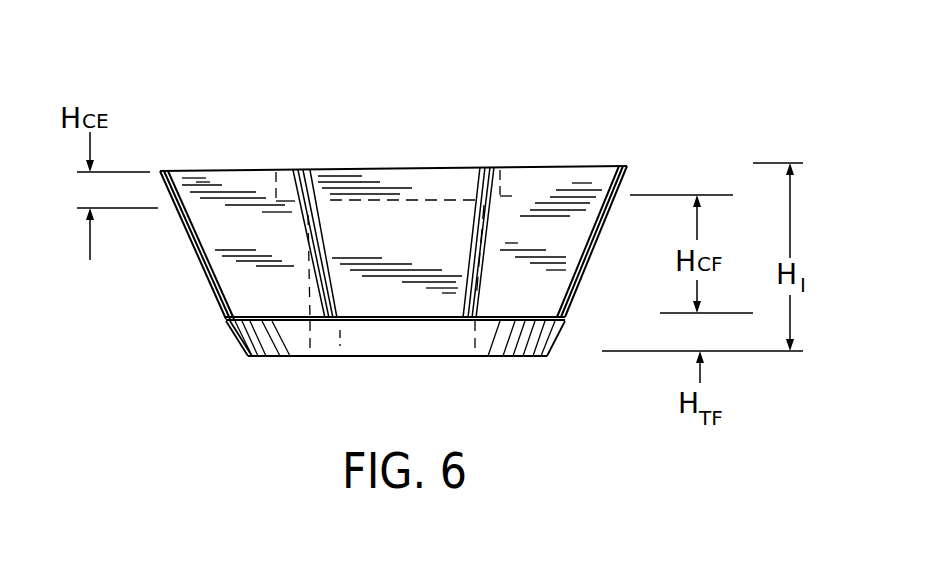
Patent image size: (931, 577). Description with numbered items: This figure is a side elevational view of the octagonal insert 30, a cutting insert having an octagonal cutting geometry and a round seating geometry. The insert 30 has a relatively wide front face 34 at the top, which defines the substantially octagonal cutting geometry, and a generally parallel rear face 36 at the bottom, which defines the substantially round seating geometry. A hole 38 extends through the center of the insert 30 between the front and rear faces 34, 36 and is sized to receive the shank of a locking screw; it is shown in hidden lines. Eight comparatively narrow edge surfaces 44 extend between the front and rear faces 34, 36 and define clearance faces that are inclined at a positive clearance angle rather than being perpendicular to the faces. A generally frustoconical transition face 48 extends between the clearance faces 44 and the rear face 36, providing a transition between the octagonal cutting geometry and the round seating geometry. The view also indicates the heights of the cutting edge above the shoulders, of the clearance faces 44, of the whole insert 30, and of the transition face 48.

The octagonal insert 30 is at (730, 133).
The front face 34 is at (535, 167).
The rear face 36 is at (515, 356).
The hole 38 is at (330, 361).
The edge surfaces 44 is at (370, 168).
The transition face 48 is at (555, 335).